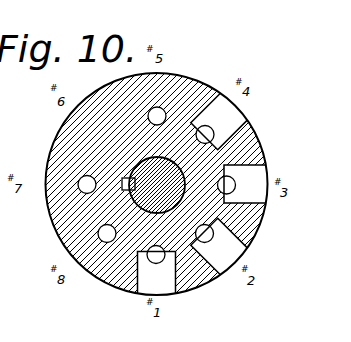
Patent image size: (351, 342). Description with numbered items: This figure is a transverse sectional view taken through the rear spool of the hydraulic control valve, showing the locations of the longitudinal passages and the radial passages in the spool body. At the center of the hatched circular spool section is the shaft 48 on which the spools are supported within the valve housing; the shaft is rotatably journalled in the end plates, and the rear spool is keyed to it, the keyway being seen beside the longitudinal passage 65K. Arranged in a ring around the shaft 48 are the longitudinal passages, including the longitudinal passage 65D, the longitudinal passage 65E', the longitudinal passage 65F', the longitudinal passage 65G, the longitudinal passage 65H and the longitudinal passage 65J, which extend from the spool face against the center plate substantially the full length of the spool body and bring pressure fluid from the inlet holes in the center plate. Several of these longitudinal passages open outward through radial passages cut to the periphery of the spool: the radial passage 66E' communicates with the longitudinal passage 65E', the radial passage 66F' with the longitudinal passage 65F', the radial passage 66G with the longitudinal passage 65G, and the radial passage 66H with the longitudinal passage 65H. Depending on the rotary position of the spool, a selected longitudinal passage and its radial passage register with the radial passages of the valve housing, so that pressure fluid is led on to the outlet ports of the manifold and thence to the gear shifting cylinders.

The shaft 48 is at (134, 174).
The longitudinal passage 65K is at (122, 180).
The longitudinal passage 65D is at (163, 109).
The longitudinal passage 65E' is at (249, 133).
The radial passage 66E' is at (247, 121).
The longitudinal passage 65F' is at (267, 177).
The radial passage 66F' is at (272, 191).
The longitudinal passage 65G is at (214, 236).
The radial passage 66G is at (245, 249).
The longitudinal passage 65H is at (149, 263).
The radial passage 66H is at (175, 293).
The longitudinal passage 65J is at (98, 235).